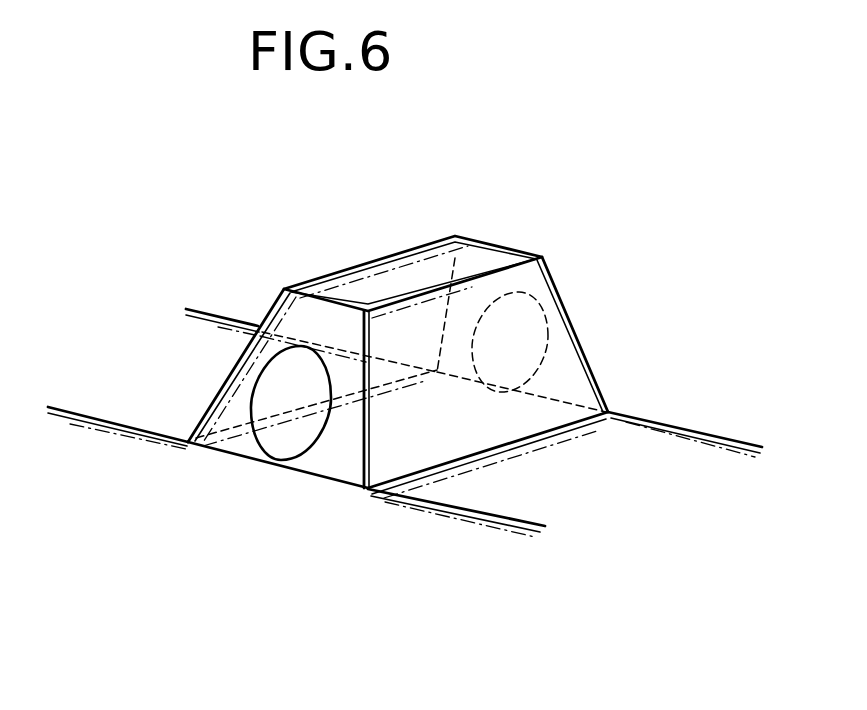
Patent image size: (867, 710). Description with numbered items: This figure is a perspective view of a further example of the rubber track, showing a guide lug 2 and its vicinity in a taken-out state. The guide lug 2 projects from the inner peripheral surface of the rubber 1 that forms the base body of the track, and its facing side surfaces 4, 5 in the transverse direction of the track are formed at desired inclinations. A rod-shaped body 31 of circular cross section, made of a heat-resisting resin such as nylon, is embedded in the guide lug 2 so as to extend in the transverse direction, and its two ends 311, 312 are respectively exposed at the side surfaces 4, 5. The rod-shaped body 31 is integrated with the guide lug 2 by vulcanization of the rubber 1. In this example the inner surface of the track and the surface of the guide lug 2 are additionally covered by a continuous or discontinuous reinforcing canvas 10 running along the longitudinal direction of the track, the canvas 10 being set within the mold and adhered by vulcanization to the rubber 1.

The rubber 1 is at (299, 569).
The guide lug 2 is at (413, 345).
The side surface 4 is at (240, 390).
The side surface 5 is at (576, 383).
The reinforcing canvas 10 is at (672, 423).
The rod-shaped body 31 is at (403, 295).
The end of rod-shaped body 311 is at (278, 437).
The end of rod-shaped body 312 is at (547, 330).